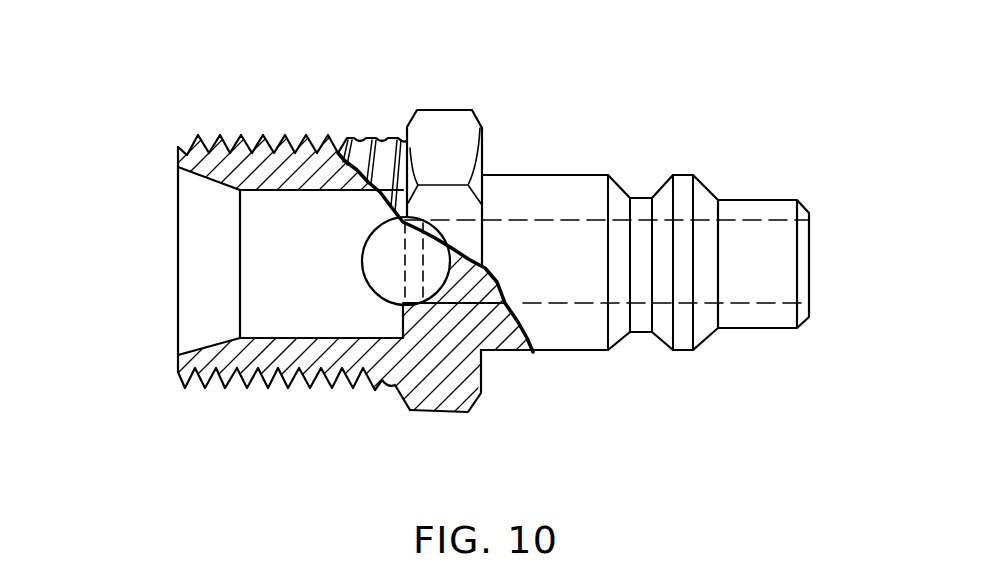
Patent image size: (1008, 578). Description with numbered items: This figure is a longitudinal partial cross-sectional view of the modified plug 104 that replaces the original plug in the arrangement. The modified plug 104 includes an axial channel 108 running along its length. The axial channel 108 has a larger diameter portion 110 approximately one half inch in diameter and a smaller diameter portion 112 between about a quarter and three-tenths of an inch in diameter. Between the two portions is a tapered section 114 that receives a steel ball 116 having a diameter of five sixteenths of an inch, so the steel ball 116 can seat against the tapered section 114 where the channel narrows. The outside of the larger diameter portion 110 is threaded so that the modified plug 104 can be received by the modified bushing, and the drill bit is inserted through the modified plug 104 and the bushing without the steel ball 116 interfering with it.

The modified plug 104 is at (586, 118).
The axial channel 108 is at (810, 258).
The larger diameter portion 110 is at (260, 372).
The smaller diameter portion 112 is at (504, 308).
The tapered section 114 is at (427, 318).
The steel ball 116 is at (362, 263).